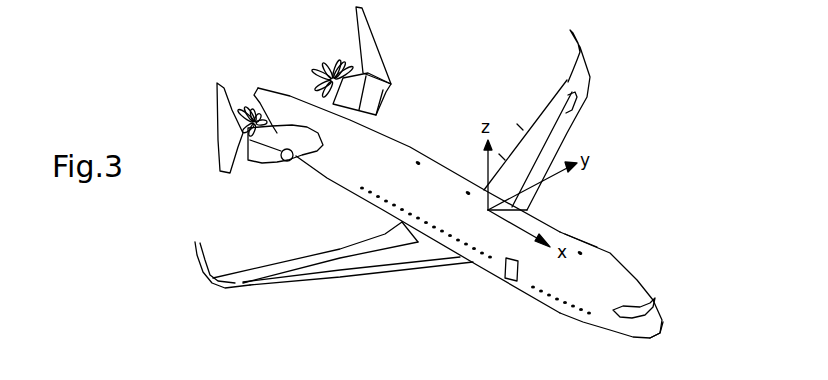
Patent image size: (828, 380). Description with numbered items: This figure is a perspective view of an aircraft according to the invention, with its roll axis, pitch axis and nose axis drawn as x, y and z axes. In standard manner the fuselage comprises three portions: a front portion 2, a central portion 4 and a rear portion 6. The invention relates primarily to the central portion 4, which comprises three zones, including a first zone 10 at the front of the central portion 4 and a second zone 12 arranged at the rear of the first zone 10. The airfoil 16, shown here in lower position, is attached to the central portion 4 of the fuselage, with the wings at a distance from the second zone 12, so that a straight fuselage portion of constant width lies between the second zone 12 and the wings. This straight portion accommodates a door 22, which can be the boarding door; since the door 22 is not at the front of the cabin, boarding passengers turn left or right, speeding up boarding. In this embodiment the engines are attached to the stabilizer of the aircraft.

The front portion 2 is at (660, 333).
The central portion 4 is at (443, 175).
The rear portion 6 is at (287, 103).
The first zone 10 is at (622, 260).
The second zone 12 is at (597, 246).
The airfoil 16 is at (328, 263).
The door 22 is at (505, 280).